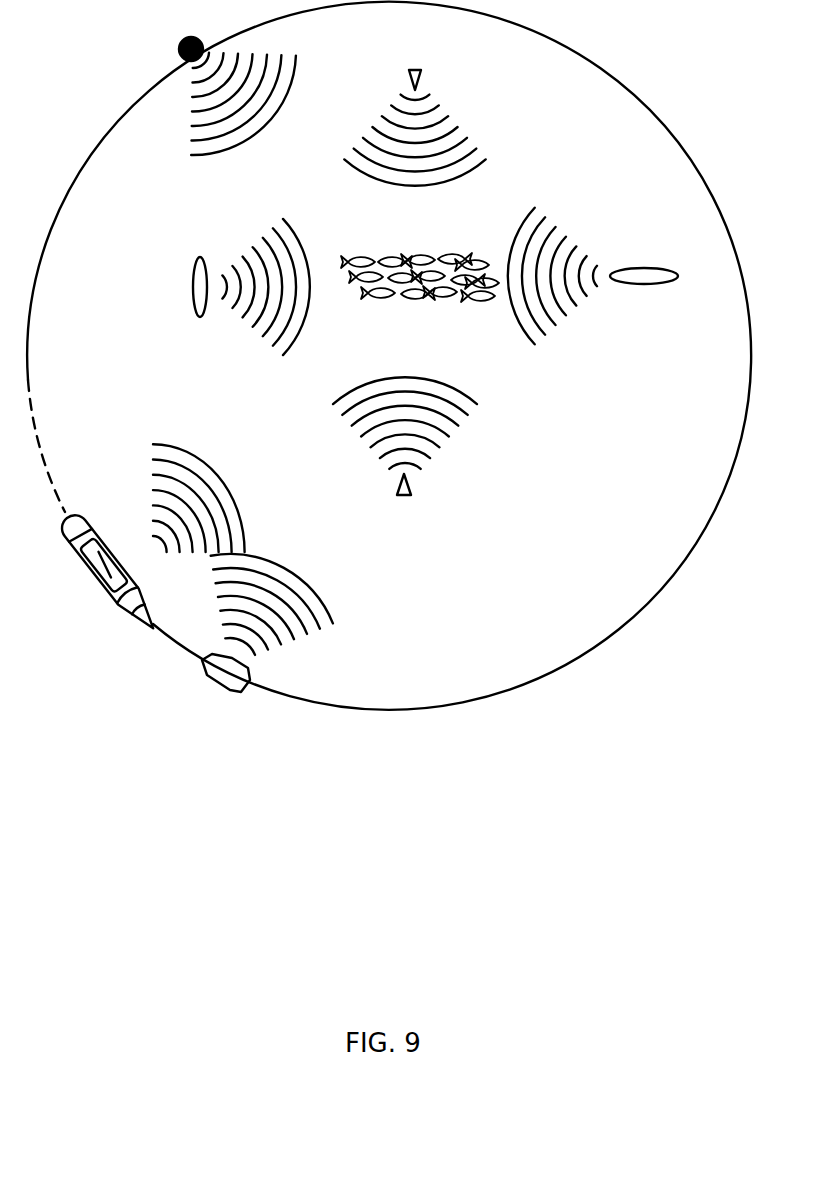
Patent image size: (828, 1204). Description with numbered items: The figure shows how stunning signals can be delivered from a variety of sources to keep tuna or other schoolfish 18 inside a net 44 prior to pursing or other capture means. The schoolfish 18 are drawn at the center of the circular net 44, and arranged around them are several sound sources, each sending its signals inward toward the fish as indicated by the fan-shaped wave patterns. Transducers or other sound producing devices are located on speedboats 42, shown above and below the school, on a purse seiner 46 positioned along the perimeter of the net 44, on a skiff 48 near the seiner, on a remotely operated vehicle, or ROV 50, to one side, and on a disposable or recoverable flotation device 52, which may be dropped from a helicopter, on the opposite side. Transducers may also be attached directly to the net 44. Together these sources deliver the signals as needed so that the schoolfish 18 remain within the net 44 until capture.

The schoolfish 18 is at (395, 255).
The speedboat 42 is at (420, 74).
The net 44 is at (146, 88).
The purse seiner 46 is at (118, 600).
The skiff 48 is at (250, 676).
The ROV 50 is at (641, 268).
The flotation device 52 is at (194, 285).